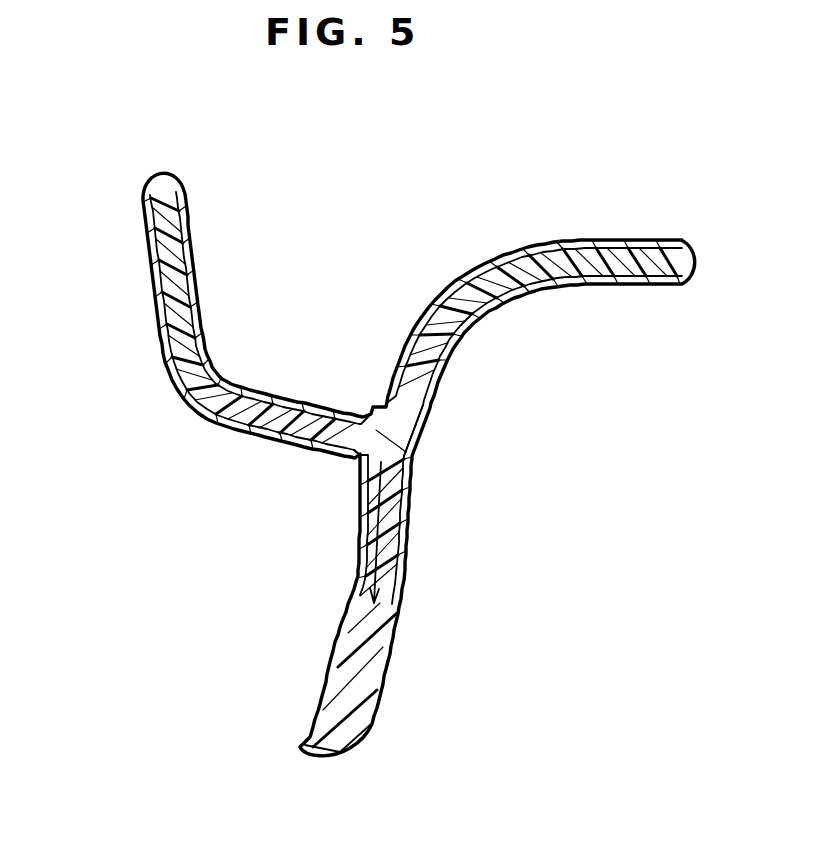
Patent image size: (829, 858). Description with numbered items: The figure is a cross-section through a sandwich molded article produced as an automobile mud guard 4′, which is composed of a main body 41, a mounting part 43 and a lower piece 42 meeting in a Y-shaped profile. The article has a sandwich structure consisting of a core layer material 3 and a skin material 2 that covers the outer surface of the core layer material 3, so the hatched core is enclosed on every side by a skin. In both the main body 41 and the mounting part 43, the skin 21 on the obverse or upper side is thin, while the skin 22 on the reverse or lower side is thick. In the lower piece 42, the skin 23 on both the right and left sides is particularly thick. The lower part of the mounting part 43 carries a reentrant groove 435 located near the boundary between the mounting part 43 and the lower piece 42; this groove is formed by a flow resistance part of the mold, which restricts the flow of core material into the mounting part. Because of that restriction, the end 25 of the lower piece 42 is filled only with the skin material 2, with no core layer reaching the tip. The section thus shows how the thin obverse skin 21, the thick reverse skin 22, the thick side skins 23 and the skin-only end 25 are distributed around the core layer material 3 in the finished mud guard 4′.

The skin material 2 is at (138, 199).
The skin on the obverse side 21 is at (180, 215).
The skin on the reverse side 22 is at (153, 267).
The core layer material 3 is at (182, 323).
The main body 41 is at (215, 438).
The mounting part 43 is at (515, 234).
The lower piece 42 is at (318, 666).
The skin on both right and left sides 23 is at (360, 592).
The reentrant groove 435 is at (390, 403).
The end 25 is at (362, 720).
The mud guard 4′ is at (458, 482).